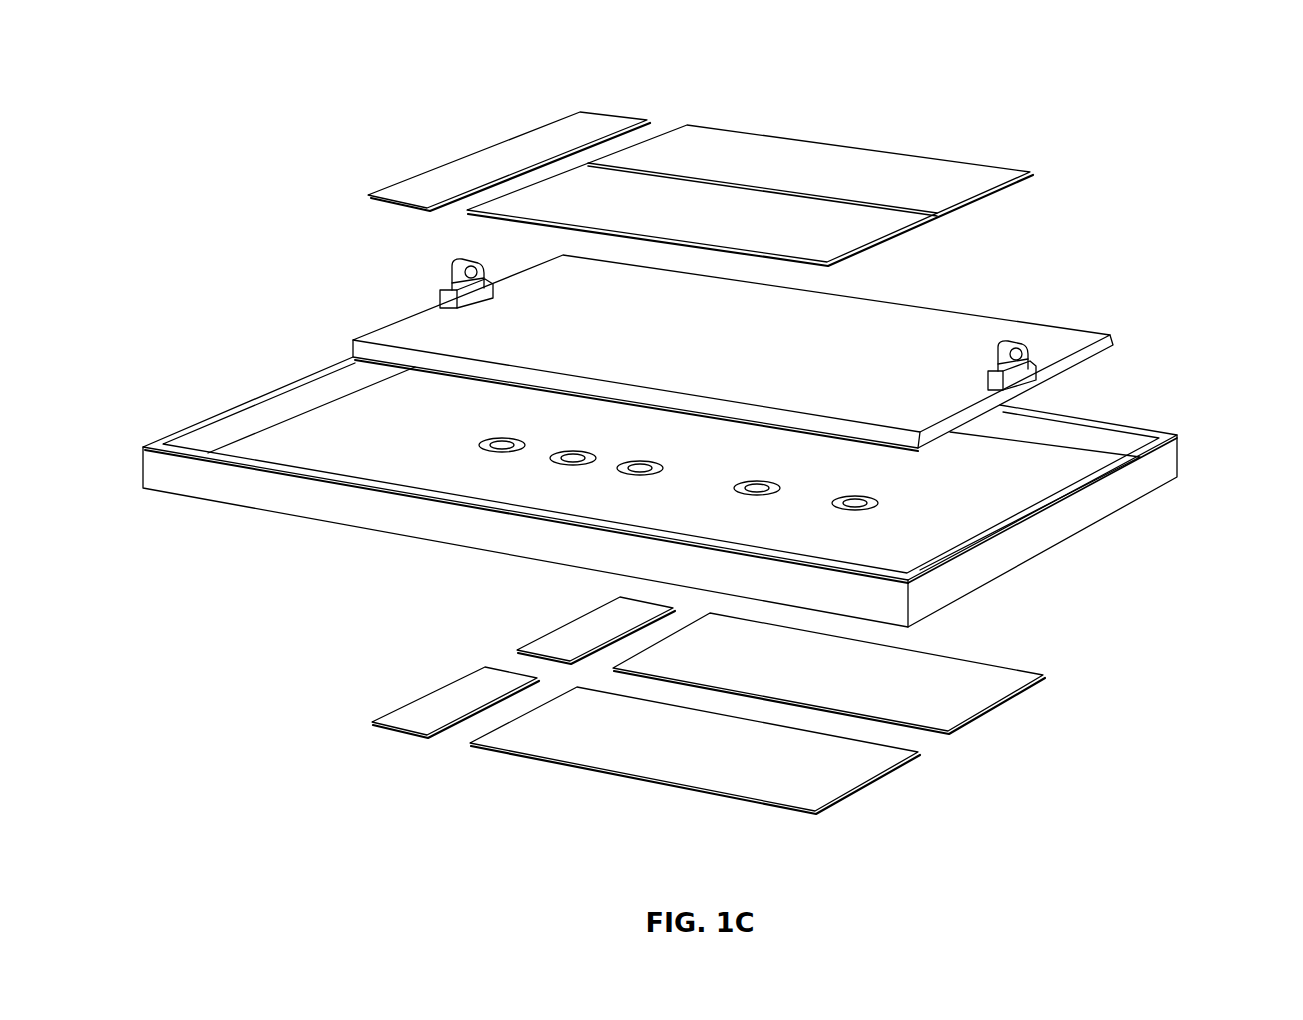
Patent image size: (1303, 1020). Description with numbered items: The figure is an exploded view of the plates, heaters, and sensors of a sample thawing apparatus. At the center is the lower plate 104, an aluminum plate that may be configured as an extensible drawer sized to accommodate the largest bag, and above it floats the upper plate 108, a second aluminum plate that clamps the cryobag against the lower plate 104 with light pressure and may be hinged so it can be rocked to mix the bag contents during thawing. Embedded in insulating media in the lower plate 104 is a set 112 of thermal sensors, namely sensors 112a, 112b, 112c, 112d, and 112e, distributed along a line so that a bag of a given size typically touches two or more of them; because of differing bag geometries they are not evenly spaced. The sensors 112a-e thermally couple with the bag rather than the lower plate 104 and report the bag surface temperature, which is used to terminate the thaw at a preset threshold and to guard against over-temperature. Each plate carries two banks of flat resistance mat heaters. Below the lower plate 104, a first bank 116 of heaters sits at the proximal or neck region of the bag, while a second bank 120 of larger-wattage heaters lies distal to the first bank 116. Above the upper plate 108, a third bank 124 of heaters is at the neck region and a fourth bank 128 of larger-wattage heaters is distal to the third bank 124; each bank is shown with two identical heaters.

The lower plate 104 is at (1133, 490).
The upper plate 108 is at (1113, 338).
The set of thermal sensors 112 is at (701, 486).
The thermal sensor 112a is at (504, 442).
The thermal sensor 112b is at (574, 456).
The thermal sensor 112c is at (643, 466).
The thermal sensor 112d is at (762, 487).
The thermal sensor 112e is at (884, 484).
The first bank of heaters 116 is at (433, 743).
The second bank of heaters 120 is at (457, 753).
The third bank of heaters 124 is at (568, 100).
The fourth bank of heaters 128 is at (692, 117).